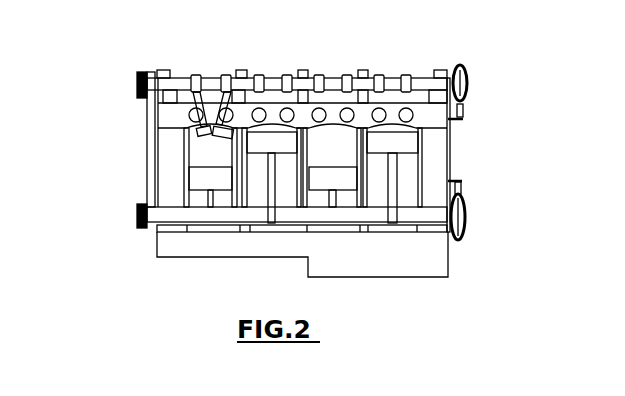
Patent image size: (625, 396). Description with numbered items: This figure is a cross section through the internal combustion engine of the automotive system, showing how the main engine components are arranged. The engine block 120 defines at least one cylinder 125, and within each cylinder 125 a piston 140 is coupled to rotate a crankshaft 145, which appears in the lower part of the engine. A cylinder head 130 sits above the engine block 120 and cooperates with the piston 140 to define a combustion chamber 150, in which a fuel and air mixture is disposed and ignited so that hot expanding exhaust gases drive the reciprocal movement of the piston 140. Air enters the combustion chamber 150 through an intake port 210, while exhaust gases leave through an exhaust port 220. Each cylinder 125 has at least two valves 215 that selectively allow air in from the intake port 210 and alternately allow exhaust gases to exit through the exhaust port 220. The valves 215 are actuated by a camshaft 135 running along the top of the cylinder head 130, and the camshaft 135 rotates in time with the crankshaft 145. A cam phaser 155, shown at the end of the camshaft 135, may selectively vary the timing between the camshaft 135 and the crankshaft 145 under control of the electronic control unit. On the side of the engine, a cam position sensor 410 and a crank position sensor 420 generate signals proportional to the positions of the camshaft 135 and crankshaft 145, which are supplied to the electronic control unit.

The engine block 120 is at (157, 168).
The cylinder 125 is at (342, 117).
The cylinder head 130 is at (158, 122).
The camshaft 135 is at (207, 78).
The piston 140 is at (335, 177).
The crankshaft 145 is at (182, 218).
The combustion chamber 150 is at (397, 128).
The cam phaser 155 is at (137, 80).
The intake port 210 is at (305, 155).
The valves 215 is at (200, 130).
The exhaust port 220 is at (277, 105).
The cam position sensor 410 is at (465, 118).
The crank position sensor 420 is at (463, 183).